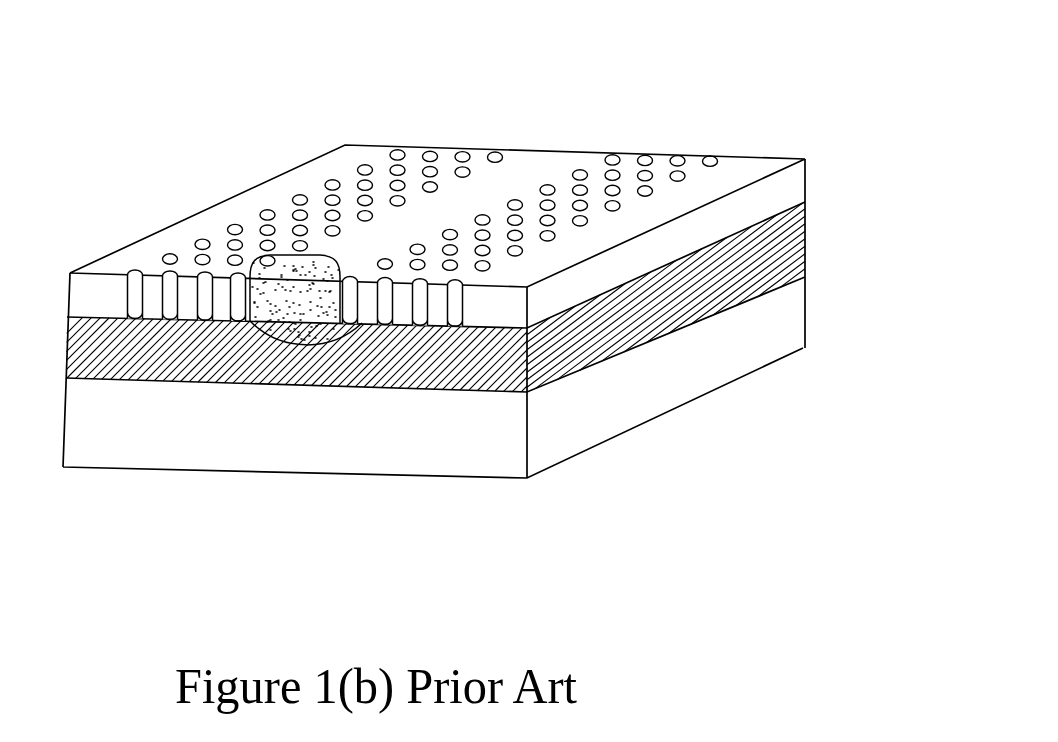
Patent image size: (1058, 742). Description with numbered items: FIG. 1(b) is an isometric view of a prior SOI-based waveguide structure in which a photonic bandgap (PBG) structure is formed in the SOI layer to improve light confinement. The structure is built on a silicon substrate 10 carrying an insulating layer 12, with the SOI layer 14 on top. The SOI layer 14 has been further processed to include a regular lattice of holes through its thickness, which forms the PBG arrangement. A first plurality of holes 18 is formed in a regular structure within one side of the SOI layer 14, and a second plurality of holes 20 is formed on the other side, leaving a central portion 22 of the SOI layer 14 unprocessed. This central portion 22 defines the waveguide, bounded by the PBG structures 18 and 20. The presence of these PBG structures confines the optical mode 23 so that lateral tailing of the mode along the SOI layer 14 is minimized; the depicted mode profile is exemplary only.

The silicon substrate 10 is at (753, 343).
The insulating layer 12 is at (763, 249).
The SOI layer 14 is at (778, 185).
The first plurality of holes 18 is at (513, 142).
The second plurality of holes 20 is at (740, 148).
The central portion 22 is at (452, 174).
The optical mode 23 is at (293, 343).